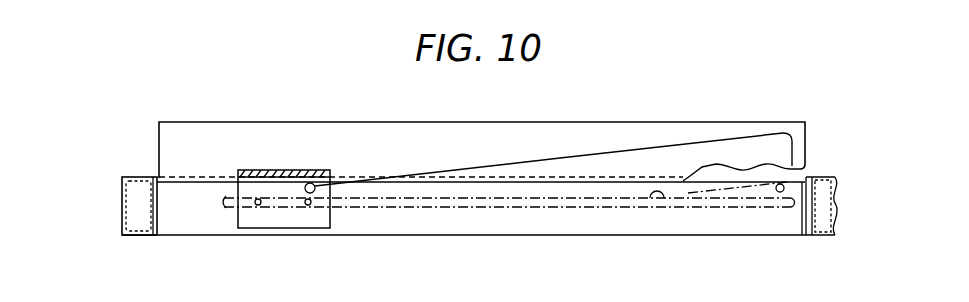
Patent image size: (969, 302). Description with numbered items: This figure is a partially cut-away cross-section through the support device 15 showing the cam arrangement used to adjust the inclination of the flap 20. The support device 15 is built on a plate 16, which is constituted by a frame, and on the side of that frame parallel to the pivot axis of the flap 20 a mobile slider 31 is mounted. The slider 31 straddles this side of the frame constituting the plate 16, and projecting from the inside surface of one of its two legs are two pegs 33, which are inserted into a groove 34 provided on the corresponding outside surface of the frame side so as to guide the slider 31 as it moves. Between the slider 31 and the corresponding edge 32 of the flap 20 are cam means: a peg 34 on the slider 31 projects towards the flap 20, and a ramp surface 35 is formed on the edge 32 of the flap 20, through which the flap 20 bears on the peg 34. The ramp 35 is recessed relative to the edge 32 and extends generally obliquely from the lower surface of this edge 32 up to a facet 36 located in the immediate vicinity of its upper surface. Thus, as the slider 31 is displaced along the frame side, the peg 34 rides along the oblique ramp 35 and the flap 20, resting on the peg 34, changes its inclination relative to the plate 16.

The support device 15 is at (116, 227).
The plate 16 is at (115, 190).
The flap 20 is at (322, 118).
The slider 31 is at (271, 170).
The edge 32 is at (466, 153).
The pegs 33 is at (259, 205).
The peg 34 is at (331, 181).
The ramp surface 35 is at (556, 155).
The facet 36 is at (805, 134).